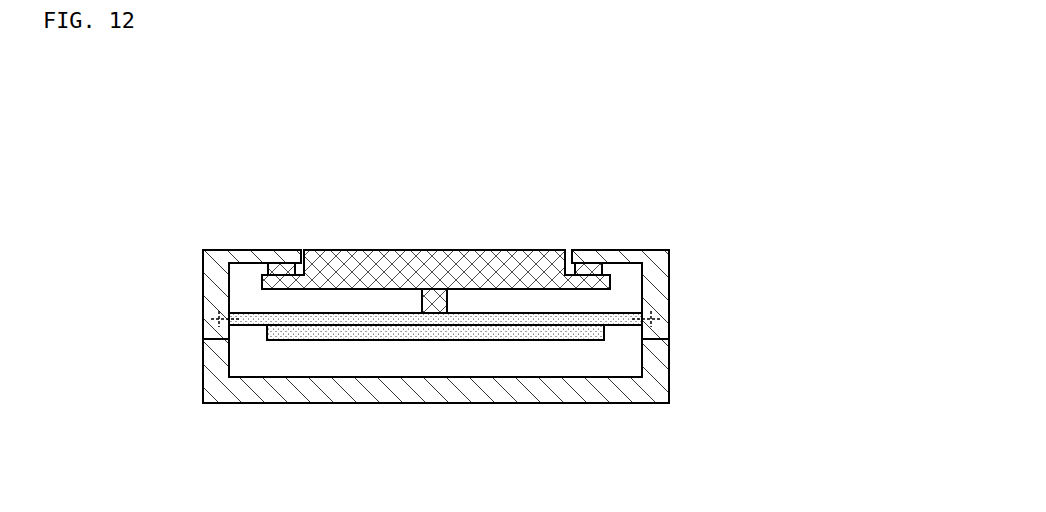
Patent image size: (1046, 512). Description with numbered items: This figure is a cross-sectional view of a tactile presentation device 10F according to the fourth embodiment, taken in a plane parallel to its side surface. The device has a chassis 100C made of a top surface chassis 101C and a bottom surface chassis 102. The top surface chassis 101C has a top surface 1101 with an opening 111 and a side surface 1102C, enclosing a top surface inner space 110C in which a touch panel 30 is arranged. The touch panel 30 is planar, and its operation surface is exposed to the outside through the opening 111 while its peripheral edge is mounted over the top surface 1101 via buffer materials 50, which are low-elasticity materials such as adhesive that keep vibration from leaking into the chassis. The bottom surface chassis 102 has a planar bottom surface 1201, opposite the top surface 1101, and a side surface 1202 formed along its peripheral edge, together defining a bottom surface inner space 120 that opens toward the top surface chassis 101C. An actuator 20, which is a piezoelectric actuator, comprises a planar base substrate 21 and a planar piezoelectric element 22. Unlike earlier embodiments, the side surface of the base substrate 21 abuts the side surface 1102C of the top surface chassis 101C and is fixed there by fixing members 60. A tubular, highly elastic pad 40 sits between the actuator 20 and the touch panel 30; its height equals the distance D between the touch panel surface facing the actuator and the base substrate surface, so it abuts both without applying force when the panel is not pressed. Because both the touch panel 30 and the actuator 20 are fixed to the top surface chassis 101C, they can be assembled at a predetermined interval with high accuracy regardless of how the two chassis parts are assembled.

The tactile presentation device 10F is at (698, 134).
The chassis 100C is at (720, 191).
The top surface chassis 101C is at (693, 226).
The top surface 1101 is at (606, 251).
The side surface 1102C is at (653, 269).
The opening 111 is at (563, 236).
The bottom surface chassis 102 is at (704, 409).
The bottom surface 1201 is at (633, 404).
The side surface 1202 is at (653, 386).
The bottom surface inner space 120 is at (548, 389).
The actuator 20 is at (395, 442).
The base substrate 21 is at (402, 322).
The piezoelectric element 22 is at (375, 342).
The touch panel 30 is at (425, 265).
The top surface inner space 110C is at (358, 279).
The pad 40 is at (450, 289).
The buffer material 50 is at (280, 264).
The fixing member 60 is at (208, 318).
The distance D is at (400, 300).